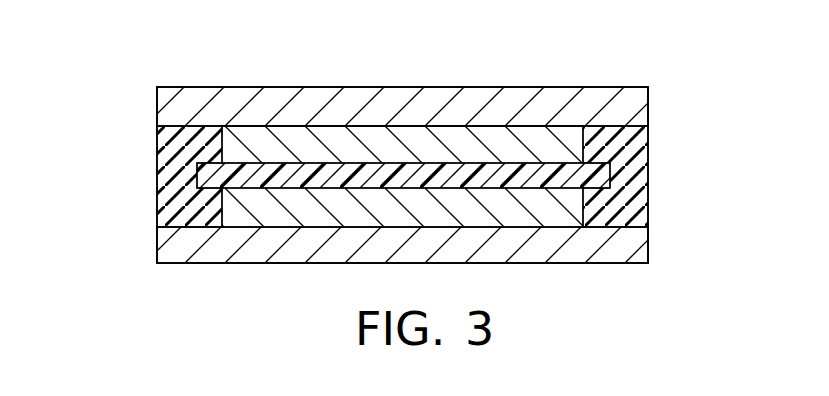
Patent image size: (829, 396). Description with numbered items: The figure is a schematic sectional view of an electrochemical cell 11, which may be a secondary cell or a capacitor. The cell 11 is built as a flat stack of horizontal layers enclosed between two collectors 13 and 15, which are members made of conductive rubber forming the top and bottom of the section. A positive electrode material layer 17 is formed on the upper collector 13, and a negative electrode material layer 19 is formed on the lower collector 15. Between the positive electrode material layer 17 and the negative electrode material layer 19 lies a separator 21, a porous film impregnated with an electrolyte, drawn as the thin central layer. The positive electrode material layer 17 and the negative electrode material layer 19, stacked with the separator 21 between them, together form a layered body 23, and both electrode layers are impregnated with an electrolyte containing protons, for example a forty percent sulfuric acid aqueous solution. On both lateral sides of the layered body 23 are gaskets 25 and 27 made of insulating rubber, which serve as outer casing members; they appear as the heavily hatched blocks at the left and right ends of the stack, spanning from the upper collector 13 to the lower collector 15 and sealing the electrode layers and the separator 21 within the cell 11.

The electrochemical cell 11 is at (459, 71).
The collector 13 is at (633, 100).
The collector 15 is at (638, 243).
The positive electrode material layer 17 is at (560, 142).
The negative electrode material layer 19 is at (560, 205).
The separator 21 is at (593, 168).
The layered body 23 is at (370, 125).
The gasket 25 is at (170, 165).
The gasket 27 is at (638, 213).